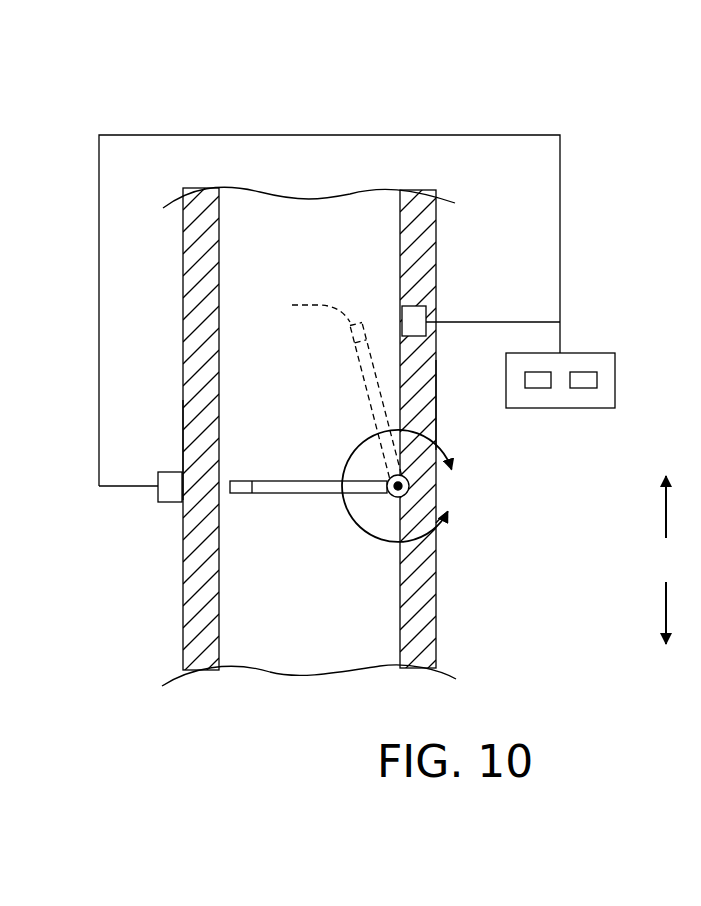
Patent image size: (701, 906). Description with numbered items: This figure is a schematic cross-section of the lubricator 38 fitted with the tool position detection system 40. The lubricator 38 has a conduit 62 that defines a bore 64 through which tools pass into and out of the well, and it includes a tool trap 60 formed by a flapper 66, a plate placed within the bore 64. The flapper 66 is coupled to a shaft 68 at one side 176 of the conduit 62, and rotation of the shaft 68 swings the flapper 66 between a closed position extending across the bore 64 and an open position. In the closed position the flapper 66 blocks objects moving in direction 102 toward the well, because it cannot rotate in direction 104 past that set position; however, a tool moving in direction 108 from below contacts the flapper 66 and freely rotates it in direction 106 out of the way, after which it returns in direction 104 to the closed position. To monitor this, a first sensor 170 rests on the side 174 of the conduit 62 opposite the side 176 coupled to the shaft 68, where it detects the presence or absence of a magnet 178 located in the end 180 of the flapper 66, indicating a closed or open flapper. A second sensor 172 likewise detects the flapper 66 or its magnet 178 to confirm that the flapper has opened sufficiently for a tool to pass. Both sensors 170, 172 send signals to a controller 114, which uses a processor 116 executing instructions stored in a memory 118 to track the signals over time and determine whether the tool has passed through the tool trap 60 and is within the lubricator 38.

The lubricator 38 is at (502, 88).
The tool position detection system 40 is at (534, 502).
The tool trap 60 is at (153, 346).
The conduit 62 is at (183, 638).
The bore 64 is at (322, 632).
The flapper 66 is at (316, 481).
The shaft 68 is at (390, 498).
The direction 102 is at (662, 610).
The direction 104 is at (422, 549).
The direction 106 is at (440, 430).
The direction 108 is at (664, 512).
The controller 114 is at (615, 378).
The processor 116 is at (538, 388).
The memory 118 is at (585, 388).
The first sensor 170 is at (170, 503).
The second sensor 172 is at (402, 322).
The side of the conduit 174 is at (183, 450).
The side of the conduit 176 is at (436, 405).
The magnet 178 is at (243, 481).
The end of the flapper 180 is at (252, 510).